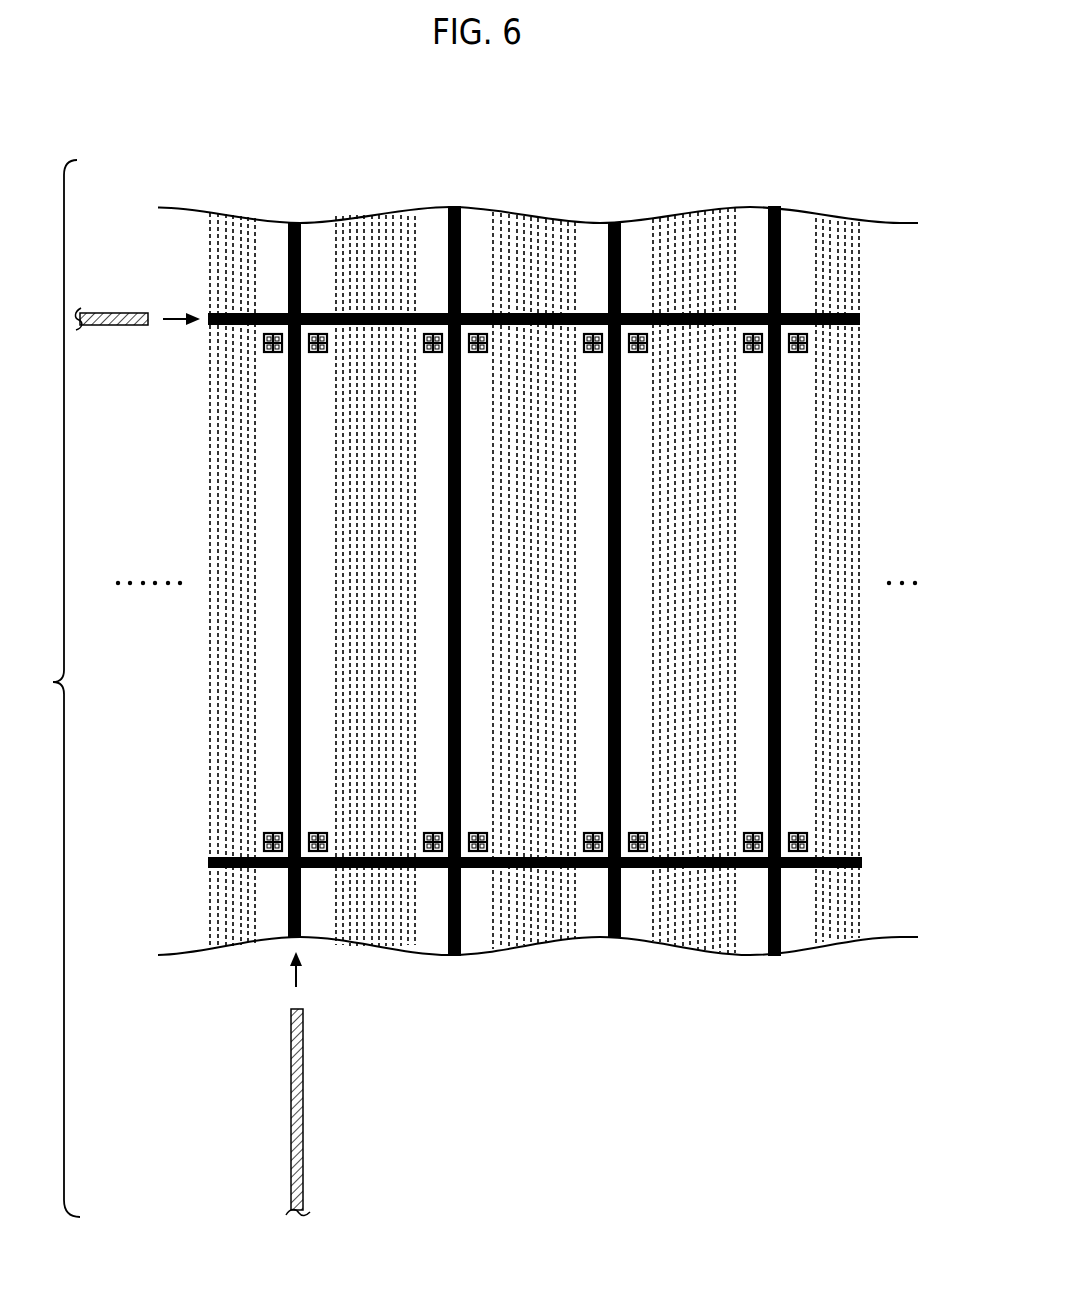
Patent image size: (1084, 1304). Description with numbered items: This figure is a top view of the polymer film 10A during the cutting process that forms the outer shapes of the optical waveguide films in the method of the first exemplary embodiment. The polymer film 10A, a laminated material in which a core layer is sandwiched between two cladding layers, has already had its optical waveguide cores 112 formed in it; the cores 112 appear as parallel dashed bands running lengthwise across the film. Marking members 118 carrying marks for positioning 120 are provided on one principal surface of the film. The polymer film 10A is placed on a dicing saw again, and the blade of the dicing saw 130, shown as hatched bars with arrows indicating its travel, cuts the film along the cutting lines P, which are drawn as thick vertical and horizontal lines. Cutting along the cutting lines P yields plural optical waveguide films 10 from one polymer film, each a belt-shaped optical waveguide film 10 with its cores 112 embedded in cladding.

The optical waveguide film 10 is at (485, 785).
The polymer film 10A is at (683, 953).
The cutting lines P is at (488, 313).
The optical waveguide cores 112 is at (571, 572).
The marking members 118 is at (481, 355).
The marks for positioning 120 is at (590, 354).
The blade of a dicing saw 130 is at (107, 312).